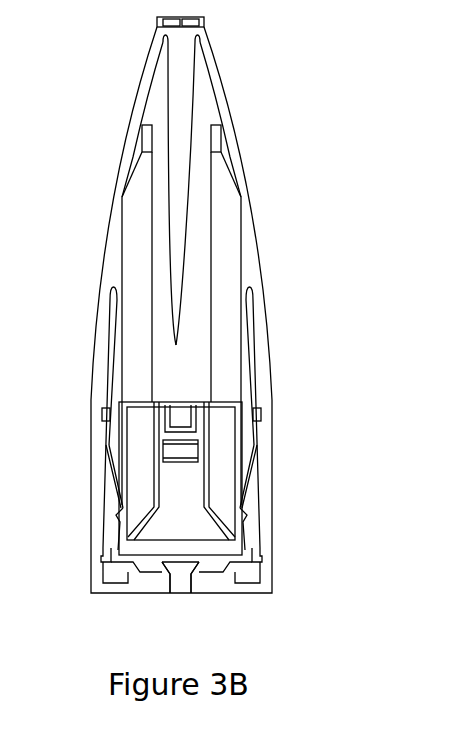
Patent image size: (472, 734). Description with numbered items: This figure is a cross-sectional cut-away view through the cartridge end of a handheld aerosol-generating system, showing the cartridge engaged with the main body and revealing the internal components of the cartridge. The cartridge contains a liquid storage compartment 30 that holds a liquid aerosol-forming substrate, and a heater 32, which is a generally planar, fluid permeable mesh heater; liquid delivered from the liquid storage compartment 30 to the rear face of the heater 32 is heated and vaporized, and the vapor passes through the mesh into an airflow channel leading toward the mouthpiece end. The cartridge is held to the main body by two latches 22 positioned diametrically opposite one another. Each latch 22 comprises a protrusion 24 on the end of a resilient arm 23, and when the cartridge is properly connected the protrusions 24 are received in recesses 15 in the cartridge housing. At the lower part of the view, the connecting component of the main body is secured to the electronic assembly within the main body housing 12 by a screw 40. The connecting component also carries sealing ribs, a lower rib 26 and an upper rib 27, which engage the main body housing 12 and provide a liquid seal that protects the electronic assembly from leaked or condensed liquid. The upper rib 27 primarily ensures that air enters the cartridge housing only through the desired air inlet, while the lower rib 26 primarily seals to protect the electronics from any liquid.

The main body housing 12 is at (273, 563).
The recess 15 is at (125, 498).
The latch 22 is at (108, 467).
The resilient arm 23 is at (248, 502).
The protrusion 24 is at (118, 508).
The lower rib 26 is at (102, 554).
The upper rib 27 is at (258, 413).
The liquid storage compartment 30 is at (200, 332).
The heater 32 is at (188, 457).
The screw 40 is at (183, 595).